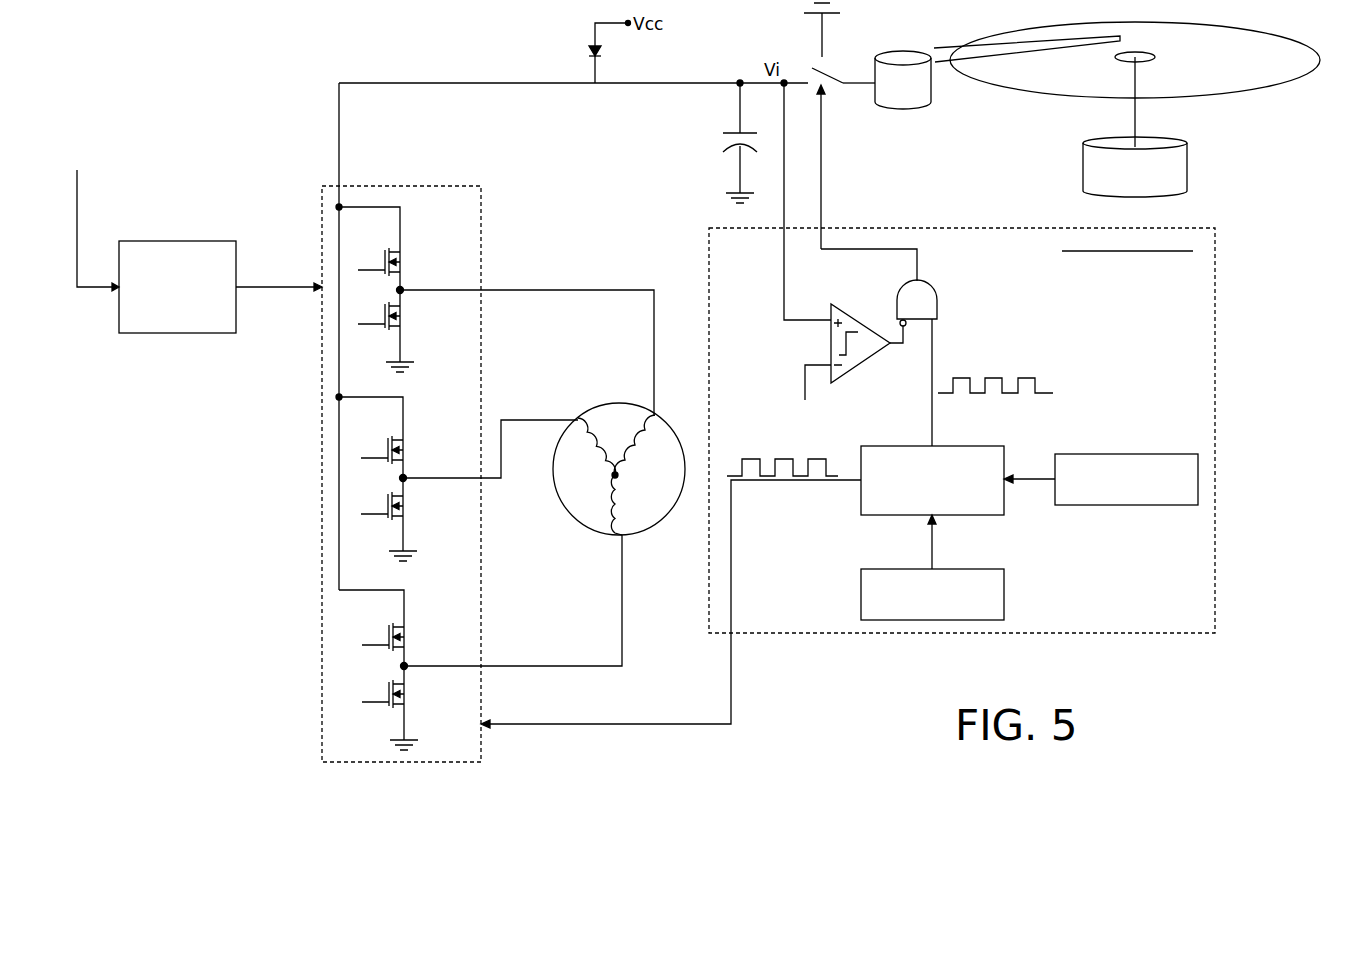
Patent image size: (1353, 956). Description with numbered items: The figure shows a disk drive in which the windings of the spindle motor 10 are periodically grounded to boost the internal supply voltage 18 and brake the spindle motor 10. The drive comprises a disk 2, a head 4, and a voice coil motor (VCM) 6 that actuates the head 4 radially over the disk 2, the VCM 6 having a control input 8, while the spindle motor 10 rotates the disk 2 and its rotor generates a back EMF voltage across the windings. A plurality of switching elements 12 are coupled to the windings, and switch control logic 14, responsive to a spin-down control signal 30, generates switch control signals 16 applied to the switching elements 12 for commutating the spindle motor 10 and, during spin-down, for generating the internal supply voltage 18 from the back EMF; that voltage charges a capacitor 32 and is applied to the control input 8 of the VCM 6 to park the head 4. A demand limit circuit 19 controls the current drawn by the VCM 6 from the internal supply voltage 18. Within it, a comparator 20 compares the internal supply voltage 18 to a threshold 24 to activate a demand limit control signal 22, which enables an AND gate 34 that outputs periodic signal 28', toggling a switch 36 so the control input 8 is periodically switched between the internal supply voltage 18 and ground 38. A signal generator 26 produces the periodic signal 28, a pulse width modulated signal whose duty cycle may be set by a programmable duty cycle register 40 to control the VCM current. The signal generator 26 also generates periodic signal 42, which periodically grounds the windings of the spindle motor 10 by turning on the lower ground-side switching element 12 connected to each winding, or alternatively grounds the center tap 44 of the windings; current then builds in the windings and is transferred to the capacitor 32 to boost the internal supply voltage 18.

The disk 2 is at (1289, 45).
The head 4 is at (1120, 37).
The voice coil motor (VCM) 6 is at (897, 50).
The control input 8 is at (851, 88).
The spindle motor 10 is at (652, 530).
The switching elements 12 is at (483, 236).
The switch control logic 14 is at (178, 242).
The switch control signals 16 is at (272, 286).
The internal supply voltage 18 is at (712, 82).
The demand limit circuit 19 is at (1217, 307).
The comparator 20 is at (852, 311).
The demand limit control signal 22 is at (899, 352).
The threshold 24 is at (803, 381).
The signal generator 26 is at (986, 518).
The periodic signal 28 is at (958, 469).
The periodic signal 28' is at (867, 183).
The spin-down control signal 30 is at (79, 184).
The capacitor 32 is at (717, 146).
The AND gate 34 is at (939, 305).
The switch 36 is at (833, 63).
The ground 38 is at (820, 31).
The programmable duty cycle register 40 is at (1128, 454).
The periodic signal 42 is at (733, 562).
The center tap 44 is at (617, 475).